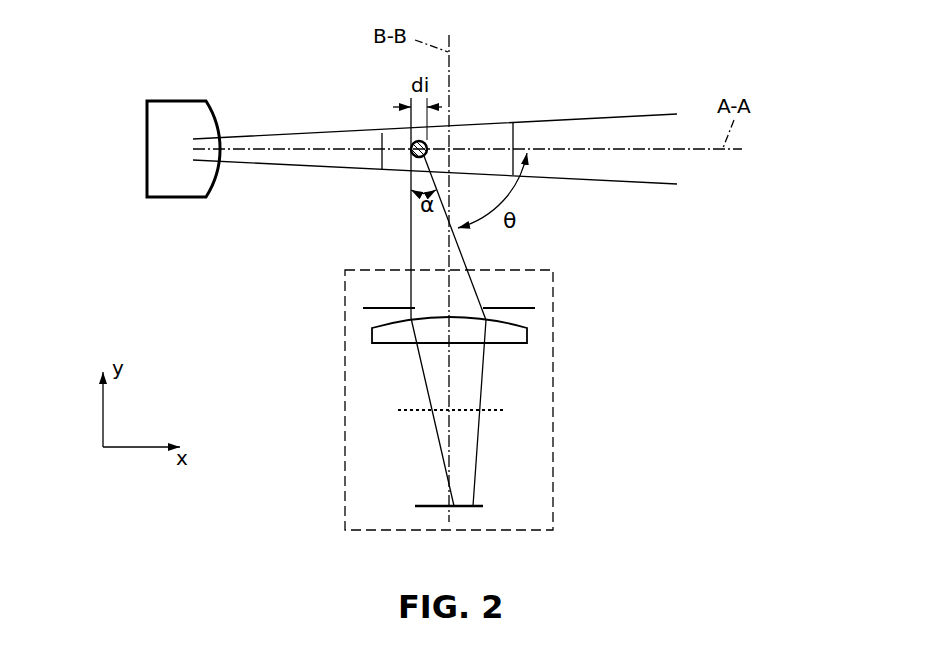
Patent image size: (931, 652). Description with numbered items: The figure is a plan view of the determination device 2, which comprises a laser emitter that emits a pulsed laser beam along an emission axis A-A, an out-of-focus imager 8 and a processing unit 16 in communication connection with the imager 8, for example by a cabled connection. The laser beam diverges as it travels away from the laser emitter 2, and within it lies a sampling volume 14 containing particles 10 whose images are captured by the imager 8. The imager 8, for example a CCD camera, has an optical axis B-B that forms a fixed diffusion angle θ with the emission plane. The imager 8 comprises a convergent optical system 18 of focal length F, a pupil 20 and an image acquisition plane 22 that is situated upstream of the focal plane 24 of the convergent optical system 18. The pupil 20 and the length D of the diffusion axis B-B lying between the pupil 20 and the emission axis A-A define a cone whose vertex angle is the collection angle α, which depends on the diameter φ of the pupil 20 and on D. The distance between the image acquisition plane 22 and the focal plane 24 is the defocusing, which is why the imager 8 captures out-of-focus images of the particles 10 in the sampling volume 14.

The determination device 2 is at (168, 112).
The out-of-focus imager 8 is at (343, 462).
The particle 10 is at (410, 142).
The sampling volume 14 is at (485, 128).
The processing unit 16 is at (626, 128).
The convergent optical system 18 is at (530, 333).
The pupil 20 is at (375, 303).
The image acquisition plane 22 is at (403, 407).
The focal plane 24 is at (421, 511).